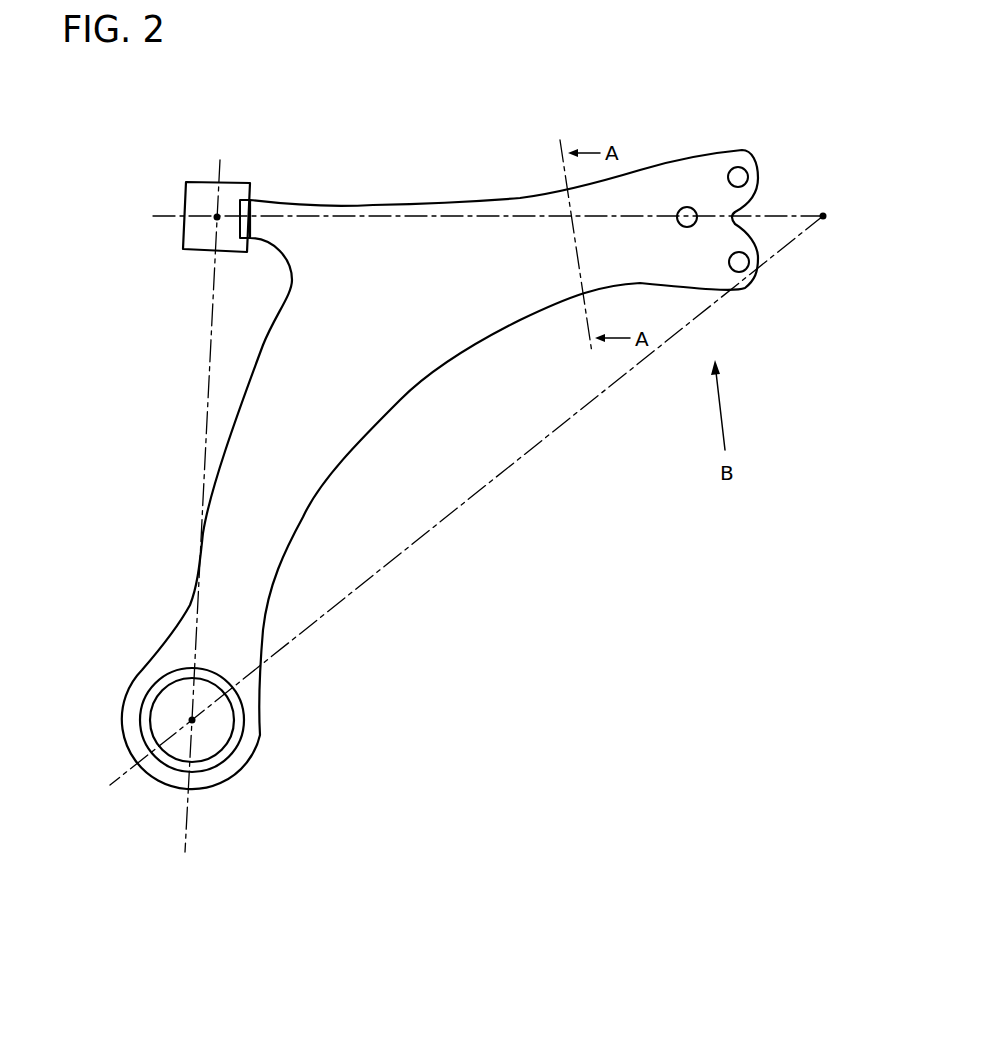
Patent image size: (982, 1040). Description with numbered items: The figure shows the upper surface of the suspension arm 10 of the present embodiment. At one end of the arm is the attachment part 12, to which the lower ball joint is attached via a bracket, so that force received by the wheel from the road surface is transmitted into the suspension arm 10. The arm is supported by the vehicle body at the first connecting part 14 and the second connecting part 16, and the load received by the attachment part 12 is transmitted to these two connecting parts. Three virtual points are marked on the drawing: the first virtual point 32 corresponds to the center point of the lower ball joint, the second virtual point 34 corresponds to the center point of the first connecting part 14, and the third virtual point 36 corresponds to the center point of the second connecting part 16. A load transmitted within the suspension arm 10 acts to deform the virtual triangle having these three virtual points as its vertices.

The suspension arm 10 is at (535, 837).
The attachment part 12 is at (706, 172).
The first connecting part 14 is at (186, 207).
The second connecting part 16 is at (150, 690).
The first virtual point 32 is at (823, 216).
The second virtual point 34 is at (215, 214).
The third virtual point 36 is at (192, 720).